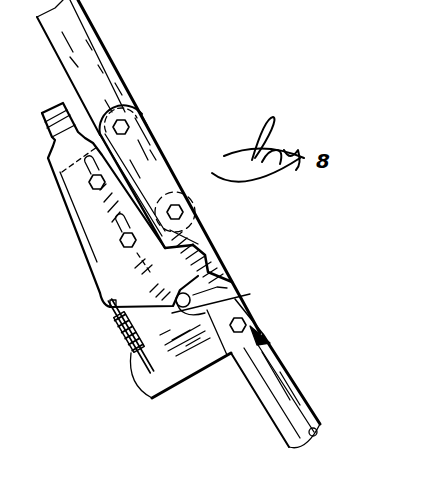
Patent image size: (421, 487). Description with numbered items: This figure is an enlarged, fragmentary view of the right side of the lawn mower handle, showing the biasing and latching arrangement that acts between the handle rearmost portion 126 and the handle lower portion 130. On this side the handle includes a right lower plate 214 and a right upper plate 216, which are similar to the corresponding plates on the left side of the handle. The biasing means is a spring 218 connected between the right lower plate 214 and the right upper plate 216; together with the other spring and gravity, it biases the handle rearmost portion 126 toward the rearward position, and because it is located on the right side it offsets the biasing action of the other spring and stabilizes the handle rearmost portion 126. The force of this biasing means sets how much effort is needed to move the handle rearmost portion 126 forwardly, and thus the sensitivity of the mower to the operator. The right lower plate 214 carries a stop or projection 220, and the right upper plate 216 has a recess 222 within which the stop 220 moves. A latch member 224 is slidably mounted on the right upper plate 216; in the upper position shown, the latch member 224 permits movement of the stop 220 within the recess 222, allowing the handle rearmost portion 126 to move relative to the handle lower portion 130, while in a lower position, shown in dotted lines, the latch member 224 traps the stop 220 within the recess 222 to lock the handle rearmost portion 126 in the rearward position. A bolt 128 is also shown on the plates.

The handle rearmost portion 126 is at (67, 32).
The handle lower portion 130 is at (268, 398).
The right upper plate 216 is at (158, 140).
The bolt 128 is at (175, 213).
The latch member 224 is at (83, 200).
The recess 222 is at (217, 303).
The stop or projection 220 is at (250, 307).
The right lower plate 214 is at (168, 378).
The spring 218 is at (125, 342).